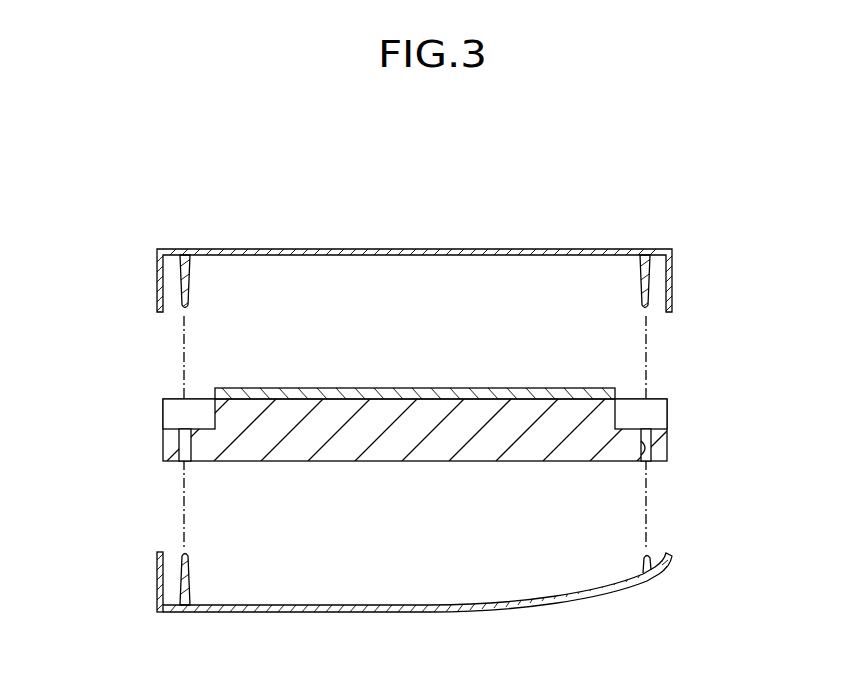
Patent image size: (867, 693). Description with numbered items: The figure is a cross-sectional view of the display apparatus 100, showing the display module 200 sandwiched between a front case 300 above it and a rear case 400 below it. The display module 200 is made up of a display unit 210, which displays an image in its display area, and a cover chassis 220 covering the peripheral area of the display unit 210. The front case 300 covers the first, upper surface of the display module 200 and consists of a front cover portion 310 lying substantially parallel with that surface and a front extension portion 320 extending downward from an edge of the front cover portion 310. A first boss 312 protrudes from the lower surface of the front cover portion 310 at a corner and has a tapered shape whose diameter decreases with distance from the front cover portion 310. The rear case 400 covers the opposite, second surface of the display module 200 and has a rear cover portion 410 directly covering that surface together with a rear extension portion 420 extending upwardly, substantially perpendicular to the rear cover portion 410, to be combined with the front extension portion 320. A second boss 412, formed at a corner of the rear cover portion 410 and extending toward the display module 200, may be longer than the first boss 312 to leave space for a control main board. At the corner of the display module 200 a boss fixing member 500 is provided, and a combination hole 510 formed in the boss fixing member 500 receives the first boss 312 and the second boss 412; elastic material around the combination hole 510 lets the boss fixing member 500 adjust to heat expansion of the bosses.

The display apparatus 100 is at (276, 192).
The display module 200 is at (131, 376).
The display unit 210 is at (412, 462).
The cover chassis 220 is at (408, 388).
The front case 300 is at (133, 238).
The front cover portion 310 is at (445, 249).
The first boss 312 is at (660, 250).
The front extension portion 320 is at (157, 279).
The rear case 400 is at (138, 549).
The rear cover portion 410 is at (443, 614).
The second boss 412 is at (656, 573).
The rear extension portion 420 is at (157, 573).
The boss fixing member 500 is at (667, 473).
The combination hole 510 is at (640, 462).